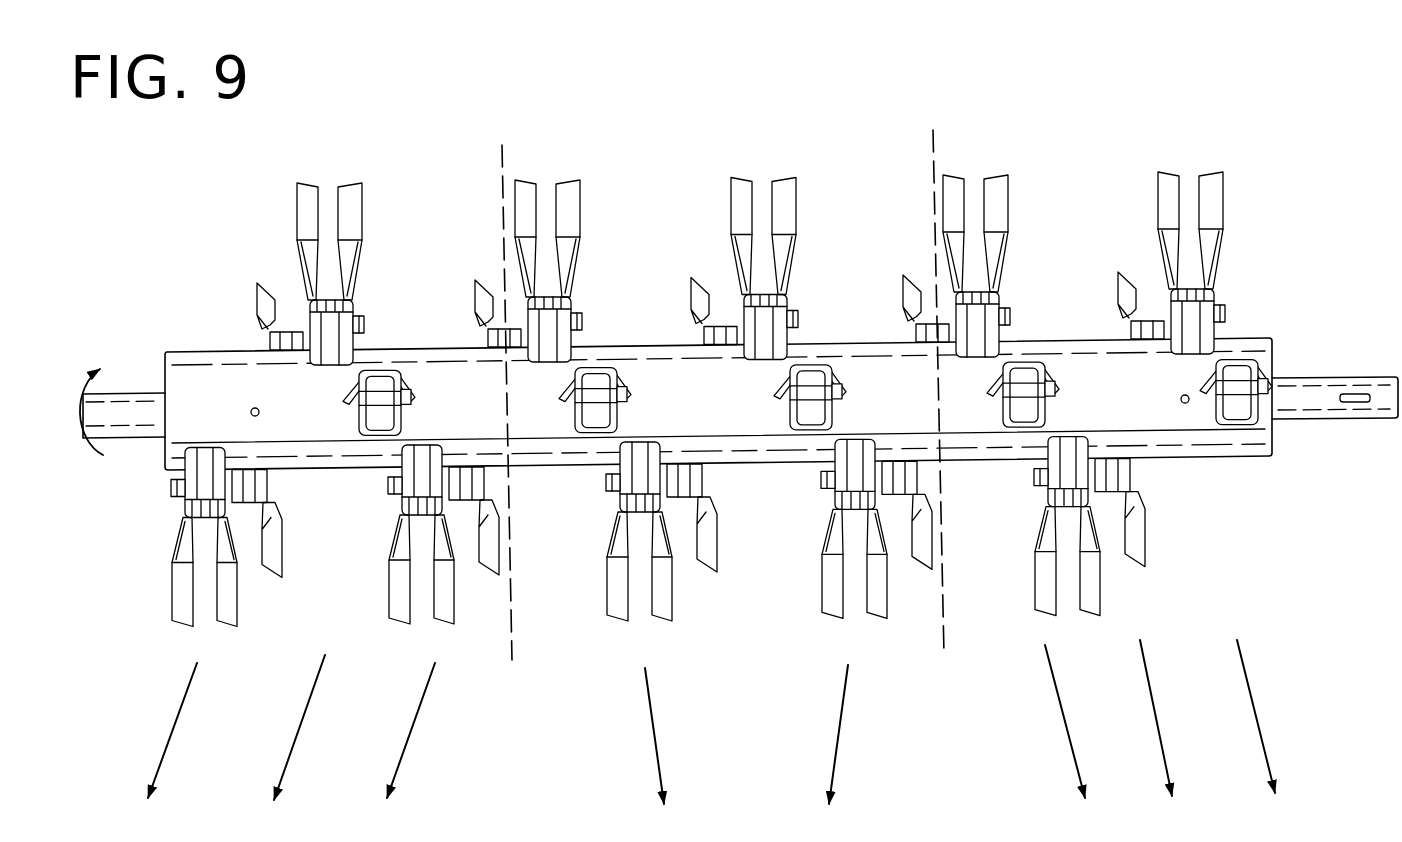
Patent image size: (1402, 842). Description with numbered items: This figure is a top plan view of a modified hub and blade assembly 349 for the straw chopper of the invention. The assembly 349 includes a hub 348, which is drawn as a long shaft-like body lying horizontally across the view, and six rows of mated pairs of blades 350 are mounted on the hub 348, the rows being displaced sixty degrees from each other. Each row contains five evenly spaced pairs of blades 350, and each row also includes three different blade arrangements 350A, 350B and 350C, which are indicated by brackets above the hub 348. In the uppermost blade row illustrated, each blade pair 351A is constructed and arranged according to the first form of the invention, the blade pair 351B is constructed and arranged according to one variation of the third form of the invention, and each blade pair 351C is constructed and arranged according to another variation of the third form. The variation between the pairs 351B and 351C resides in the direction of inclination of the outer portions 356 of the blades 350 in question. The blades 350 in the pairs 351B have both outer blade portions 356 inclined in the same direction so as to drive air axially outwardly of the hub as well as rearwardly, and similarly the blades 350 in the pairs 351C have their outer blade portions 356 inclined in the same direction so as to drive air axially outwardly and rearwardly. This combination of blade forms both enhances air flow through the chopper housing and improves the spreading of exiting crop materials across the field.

The hub 348 is at (543, 464).
The hub and blade assembly 349 is at (1200, 516).
The blade 350 is at (1154, 258).
The first blade arrangement 350A is at (837, 150).
The second blade arrangement 350B is at (450, 155).
The third blade arrangement 350C is at (1258, 140).
The blade pair 351A is at (596, 247).
The blade pair 351B is at (374, 255).
The blade pair 351C is at (1023, 238).
The outer blade portion 356 is at (313, 210).